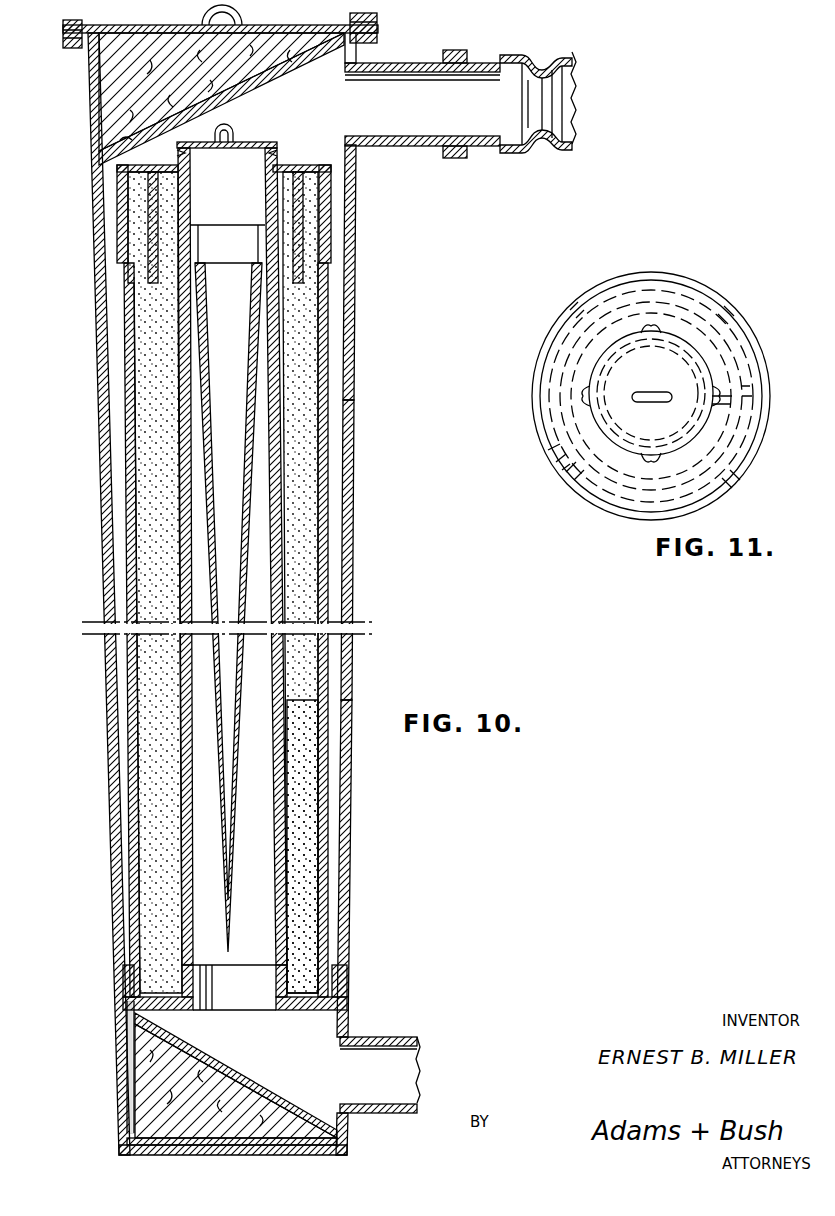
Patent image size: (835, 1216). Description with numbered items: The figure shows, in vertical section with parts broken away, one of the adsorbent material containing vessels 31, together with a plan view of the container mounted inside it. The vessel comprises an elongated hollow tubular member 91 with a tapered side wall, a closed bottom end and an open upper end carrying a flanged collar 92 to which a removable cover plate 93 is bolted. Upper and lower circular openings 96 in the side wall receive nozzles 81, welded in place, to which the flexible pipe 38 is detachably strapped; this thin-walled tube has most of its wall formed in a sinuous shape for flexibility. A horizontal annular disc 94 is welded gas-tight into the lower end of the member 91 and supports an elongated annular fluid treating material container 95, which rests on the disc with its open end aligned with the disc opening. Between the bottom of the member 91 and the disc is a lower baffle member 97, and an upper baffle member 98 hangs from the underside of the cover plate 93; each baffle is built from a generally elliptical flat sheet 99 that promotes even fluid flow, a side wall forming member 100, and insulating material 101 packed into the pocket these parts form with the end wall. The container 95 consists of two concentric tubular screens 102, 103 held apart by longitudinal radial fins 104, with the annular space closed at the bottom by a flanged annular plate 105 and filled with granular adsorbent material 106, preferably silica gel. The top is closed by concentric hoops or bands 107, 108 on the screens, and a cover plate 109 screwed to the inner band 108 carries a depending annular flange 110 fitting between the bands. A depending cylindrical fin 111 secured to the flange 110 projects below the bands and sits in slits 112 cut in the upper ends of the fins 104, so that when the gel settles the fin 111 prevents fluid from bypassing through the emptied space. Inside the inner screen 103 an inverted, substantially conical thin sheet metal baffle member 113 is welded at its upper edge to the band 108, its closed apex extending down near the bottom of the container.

In FIG. 10, the adsorbent material containing vessel 31 is at (355, 533).
In FIG. 10, the upper flexible pipe 38 is at (511, 152).
In FIG. 10, the nozzle 81 is at (400, 146).
In FIG. 10, the tubular member 91 is at (352, 465).
In FIG. 10, the flanged collar 92 is at (374, 45).
In FIG. 10, the cover plate 93 is at (248, 28).
In FIG. 10, the annular disc 94 is at (283, 1012).
In FIG. 10, the fluid treating material container 95 is at (335, 372).
In FIG. 11, the fluid treating material container 95 is at (598, 270).
In FIG. 10, the circular opening 96 is at (348, 80).
In FIG. 10, the lower baffle member 97 is at (224, 1075).
In FIG. 10, the upper baffle member 98 is at (268, 84).
In FIG. 10, the elliptical-shaped flat sheet 99 is at (226, 96).
In FIG. 10, the side wall forming member 100 is at (100, 106).
In FIG. 10, the insulating material 101 is at (115, 77).
In FIG. 10, the outer tubular screen 102 is at (133, 448).
In FIG. 10, the inner tubular screen 103 is at (192, 352).
In FIG. 11, the longitudinal radial fin 104 is at (736, 331).
In FIG. 10, the flanged annular plate 105 is at (125, 1003).
In FIG. 10, the granular adsorbent material 106 is at (310, 934).
In FIG. 10, the outer hoop or band 107 is at (328, 212).
In FIG. 11, the outer hoop or band 107 is at (742, 441).
In FIG. 10, the inner hoop or band 108 is at (190, 211).
In FIG. 10, the cover plate 109 is at (238, 141).
In FIG. 11, the cover plate 109 is at (651, 393).
In FIG. 10, the depending annular flange 110 is at (285, 167).
In FIG. 10, the depending cylindrical fin 111 is at (328, 236).
In FIG. 11, the depending cylindrical fin 111 is at (744, 358).
In FIG. 11, the slit 112 is at (560, 466).
In FIG. 10, the conically shaped baffle member 113 is at (235, 788).